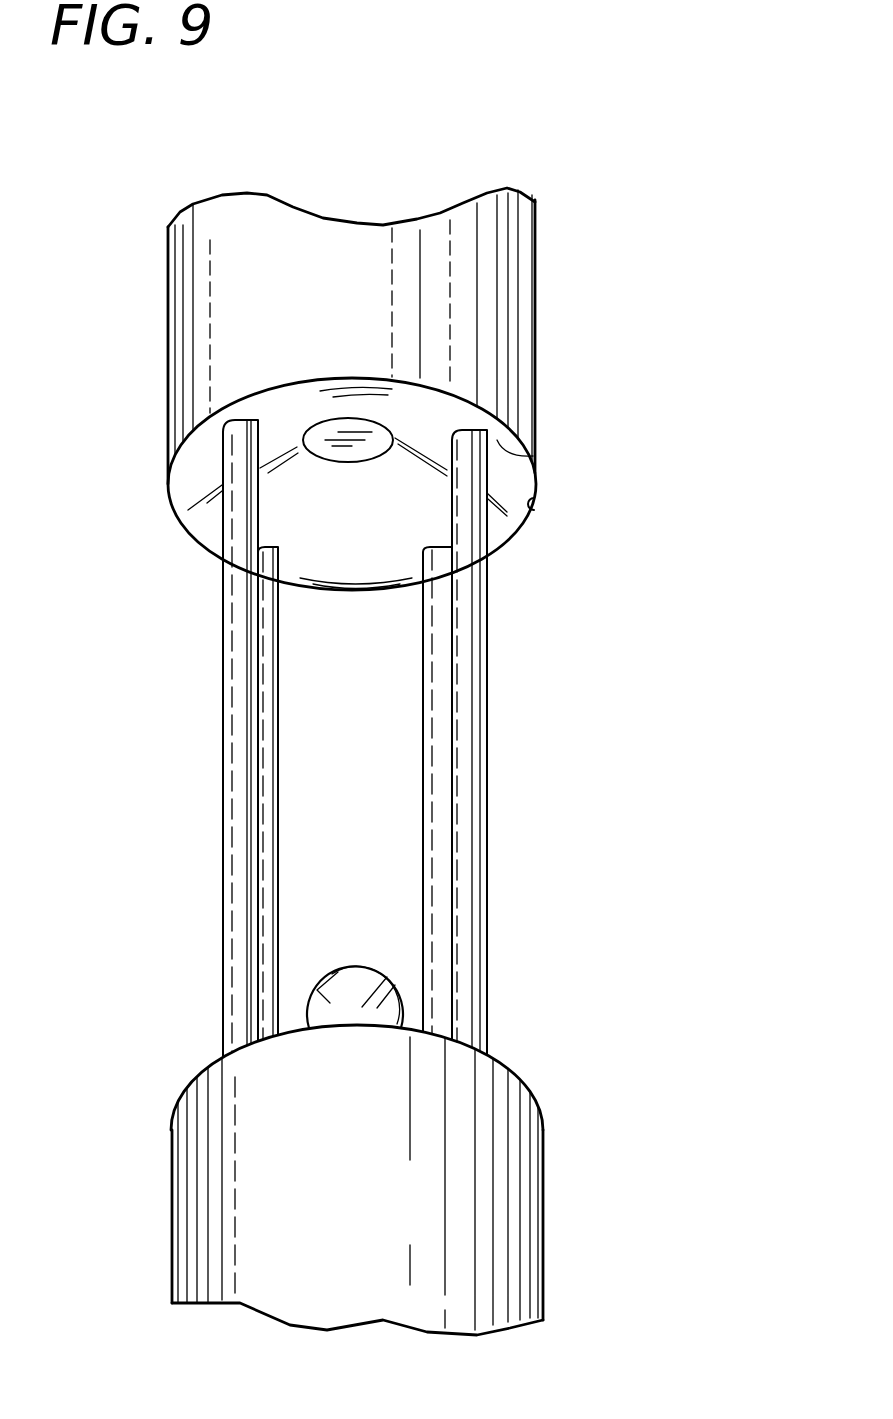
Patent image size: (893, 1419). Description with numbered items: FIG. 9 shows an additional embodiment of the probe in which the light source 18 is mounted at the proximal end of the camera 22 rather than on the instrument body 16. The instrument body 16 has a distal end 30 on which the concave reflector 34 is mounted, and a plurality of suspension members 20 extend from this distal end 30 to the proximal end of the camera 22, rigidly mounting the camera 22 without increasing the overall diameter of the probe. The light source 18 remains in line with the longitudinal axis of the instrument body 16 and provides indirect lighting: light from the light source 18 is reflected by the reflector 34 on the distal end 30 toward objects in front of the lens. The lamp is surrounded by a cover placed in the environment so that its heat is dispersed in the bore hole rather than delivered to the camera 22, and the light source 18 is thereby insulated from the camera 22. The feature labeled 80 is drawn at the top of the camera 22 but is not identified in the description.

The instrument body 16 is at (530, 281).
The distal end 30 is at (537, 447).
The reflector 34 is at (533, 509).
The suspension members 20 is at (238, 682).
The light source 18 is at (343, 955).
The camera 22 is at (180, 1140).
The end cap 80 is at (515, 1072).